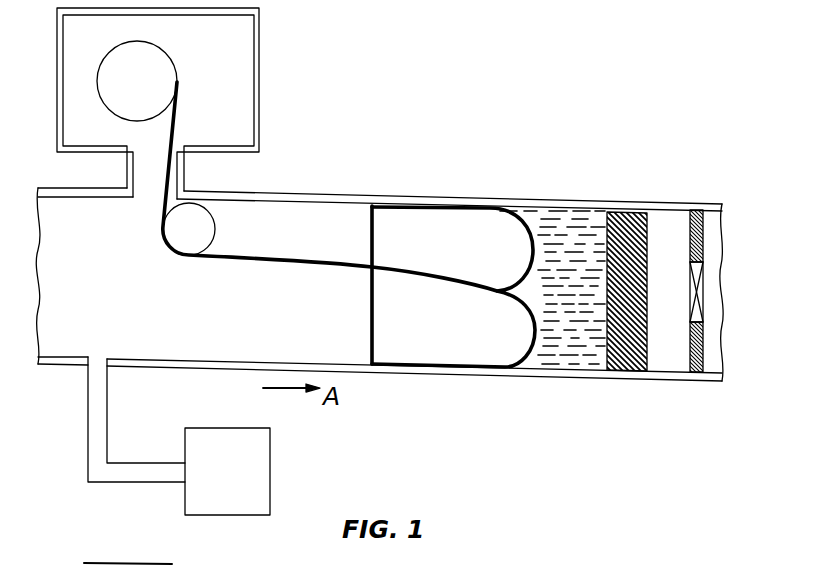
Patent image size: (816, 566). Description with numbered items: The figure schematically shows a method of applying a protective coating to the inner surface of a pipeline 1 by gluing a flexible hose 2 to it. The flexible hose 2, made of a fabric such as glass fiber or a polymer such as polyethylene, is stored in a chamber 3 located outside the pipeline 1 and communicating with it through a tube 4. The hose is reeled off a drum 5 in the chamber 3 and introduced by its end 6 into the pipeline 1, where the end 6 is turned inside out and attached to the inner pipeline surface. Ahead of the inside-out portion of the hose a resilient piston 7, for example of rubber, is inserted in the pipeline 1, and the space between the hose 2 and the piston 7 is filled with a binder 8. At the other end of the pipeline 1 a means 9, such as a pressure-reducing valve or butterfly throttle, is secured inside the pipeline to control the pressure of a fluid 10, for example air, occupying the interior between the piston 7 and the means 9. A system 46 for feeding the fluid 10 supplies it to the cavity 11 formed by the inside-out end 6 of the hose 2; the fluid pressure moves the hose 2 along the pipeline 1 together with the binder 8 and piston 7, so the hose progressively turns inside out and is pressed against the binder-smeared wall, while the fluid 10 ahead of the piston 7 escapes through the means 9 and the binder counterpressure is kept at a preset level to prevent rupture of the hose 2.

The pipeline 1 is at (498, 206).
The flexible hose 2 is at (175, 130).
The chamber 3 is at (256, 72).
The tube 4 is at (185, 175).
The drum 5 is at (162, 77).
The end of the flexible hose 6 is at (370, 220).
The piston 7 is at (630, 213).
The binder 8 is at (587, 217).
The means for controlling the pressure of a fluid 9 is at (693, 374).
The fluid 10 is at (303, 225).
The cavity 11 is at (433, 333).
The system for feeding the fluid 46 is at (198, 450).